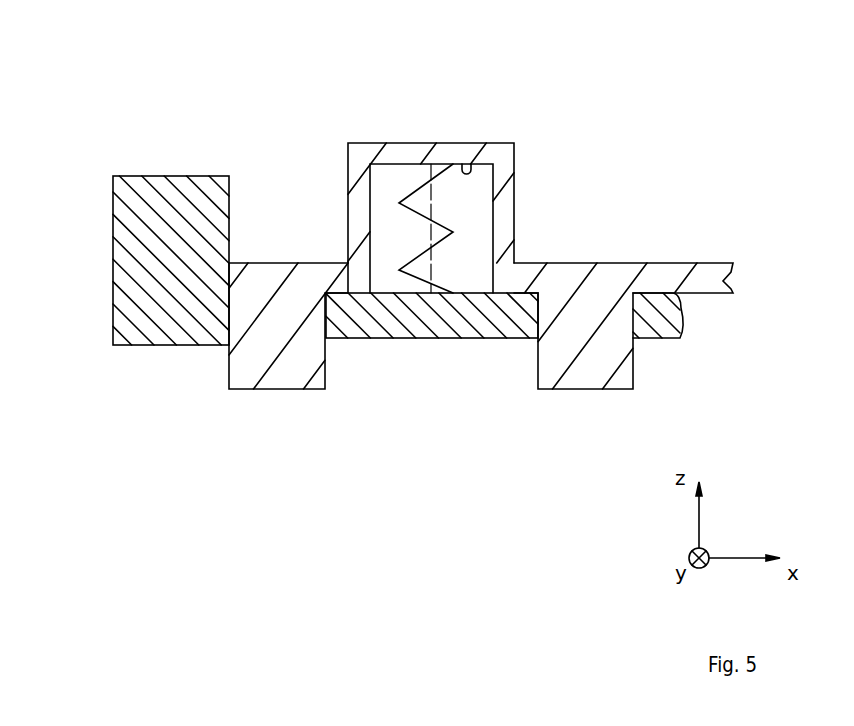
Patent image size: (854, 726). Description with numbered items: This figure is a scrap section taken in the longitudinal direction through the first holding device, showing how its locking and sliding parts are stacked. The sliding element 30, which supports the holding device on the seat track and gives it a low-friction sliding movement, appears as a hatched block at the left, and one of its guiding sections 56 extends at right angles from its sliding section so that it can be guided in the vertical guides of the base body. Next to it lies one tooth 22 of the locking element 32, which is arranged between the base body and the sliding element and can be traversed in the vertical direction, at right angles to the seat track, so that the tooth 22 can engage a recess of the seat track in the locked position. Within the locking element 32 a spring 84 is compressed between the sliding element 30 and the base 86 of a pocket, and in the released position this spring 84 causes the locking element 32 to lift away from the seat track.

The sliding element 30 is at (112, 176).
The guiding section 56 is at (197, 222).
The tooth 22 is at (264, 289).
The locking element 32 is at (517, 189).
The spring 84 is at (412, 207).
The base of the pocket 86 is at (472, 164).